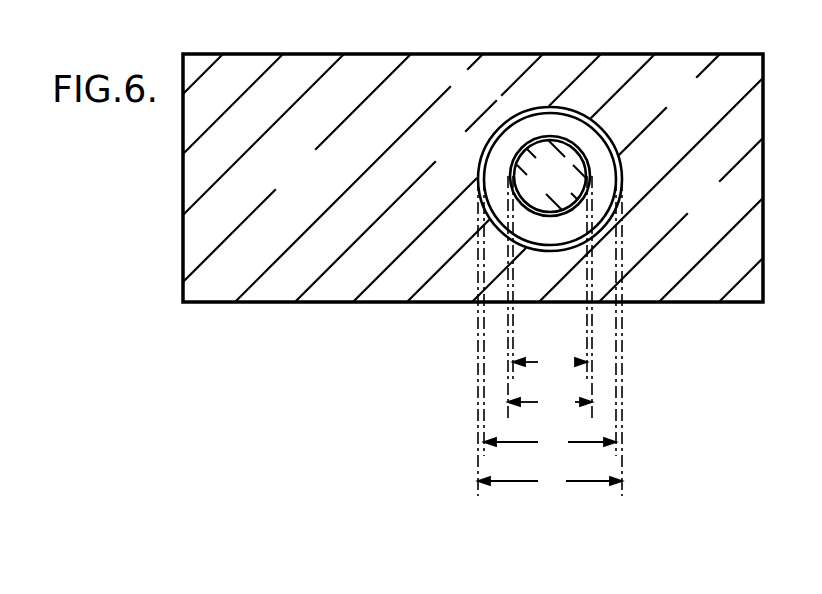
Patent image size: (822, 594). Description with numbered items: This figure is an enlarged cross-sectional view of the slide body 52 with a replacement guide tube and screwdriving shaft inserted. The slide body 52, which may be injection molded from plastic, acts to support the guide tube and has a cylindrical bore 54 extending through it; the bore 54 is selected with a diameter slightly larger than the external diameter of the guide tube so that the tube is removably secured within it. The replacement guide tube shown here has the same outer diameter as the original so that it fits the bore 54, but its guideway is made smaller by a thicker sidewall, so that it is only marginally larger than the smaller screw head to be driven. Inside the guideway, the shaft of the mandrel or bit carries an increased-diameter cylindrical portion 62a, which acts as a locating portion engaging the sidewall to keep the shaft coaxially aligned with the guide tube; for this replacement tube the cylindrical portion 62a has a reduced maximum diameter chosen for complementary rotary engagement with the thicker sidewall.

The slide body 52 is at (318, 185).
The cylindrical bore 54 is at (563, 107).
The cylindrical portion 62a is at (511, 168).